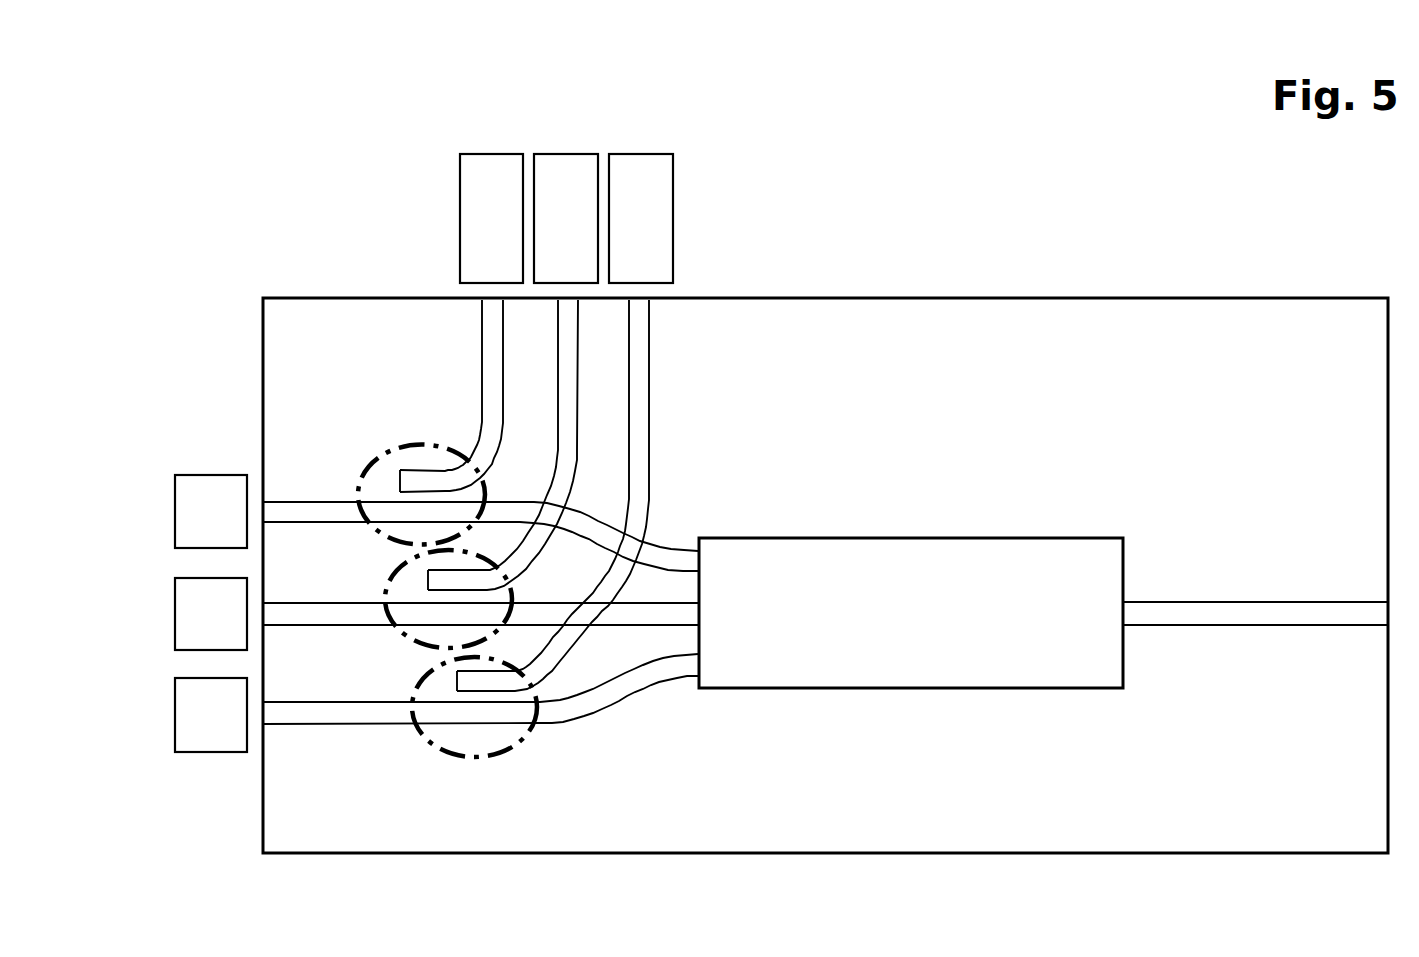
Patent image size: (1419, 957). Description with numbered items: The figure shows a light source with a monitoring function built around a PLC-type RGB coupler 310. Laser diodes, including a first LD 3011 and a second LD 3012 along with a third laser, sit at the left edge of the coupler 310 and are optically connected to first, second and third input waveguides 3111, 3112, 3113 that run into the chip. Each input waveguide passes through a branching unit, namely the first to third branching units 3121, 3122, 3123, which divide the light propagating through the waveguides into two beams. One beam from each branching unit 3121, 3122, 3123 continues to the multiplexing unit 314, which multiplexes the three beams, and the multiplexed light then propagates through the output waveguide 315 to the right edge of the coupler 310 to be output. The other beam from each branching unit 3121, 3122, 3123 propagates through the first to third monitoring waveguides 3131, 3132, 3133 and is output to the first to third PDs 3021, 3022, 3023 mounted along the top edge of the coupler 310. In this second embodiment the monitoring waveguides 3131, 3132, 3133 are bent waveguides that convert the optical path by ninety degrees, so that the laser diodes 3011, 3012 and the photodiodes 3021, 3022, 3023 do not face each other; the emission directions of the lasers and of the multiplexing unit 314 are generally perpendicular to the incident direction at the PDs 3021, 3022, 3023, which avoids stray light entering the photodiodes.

The PLC-type RGB coupler 310 is at (1318, 298).
The first PD 3021 is at (483, 152).
The second PD 3022 is at (558, 152).
The third PD 3023 is at (635, 152).
The first LD 3011 is at (175, 518).
The second LD 3012 is at (175, 618).
The first input waveguide 3111 is at (318, 500).
The second input waveguide 3112 is at (318, 602).
The third input waveguide 3113 is at (310, 728).
The first branching unit 3121 is at (420, 444).
The second branching unit 3122 is at (415, 645).
The third branching unit 3123 is at (466, 758).
The first monitoring waveguide 3131 is at (483, 322).
The second monitoring waveguide 3132 is at (577, 328).
The third monitoring waveguide 3133 is at (650, 392).
The multiplexing unit 314 is at (1068, 538).
The output waveguide 315 is at (1250, 602).